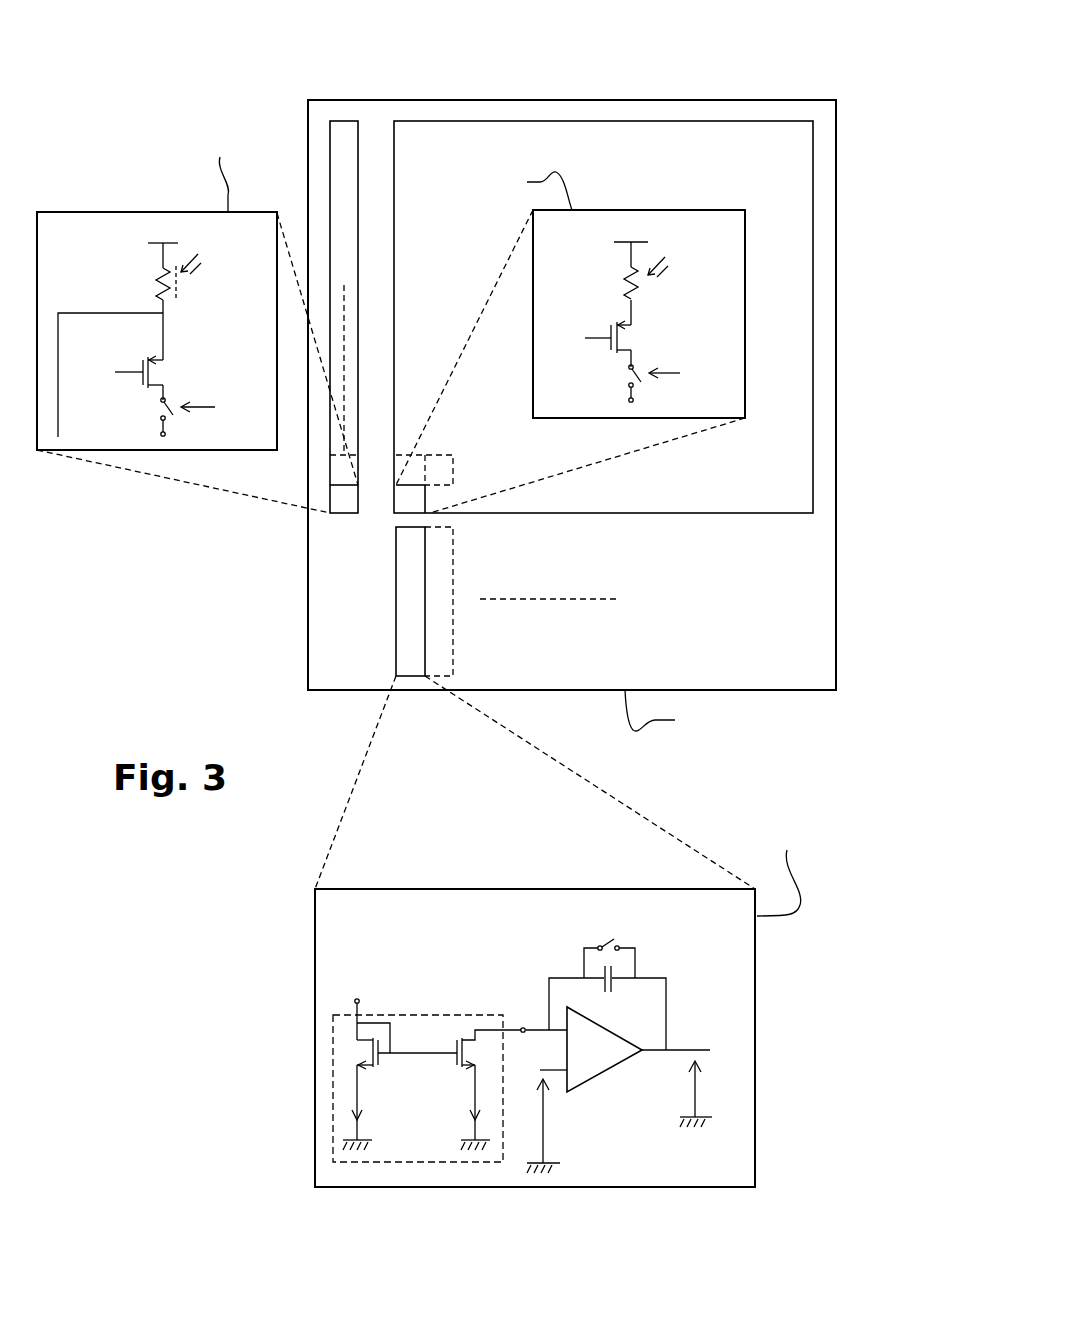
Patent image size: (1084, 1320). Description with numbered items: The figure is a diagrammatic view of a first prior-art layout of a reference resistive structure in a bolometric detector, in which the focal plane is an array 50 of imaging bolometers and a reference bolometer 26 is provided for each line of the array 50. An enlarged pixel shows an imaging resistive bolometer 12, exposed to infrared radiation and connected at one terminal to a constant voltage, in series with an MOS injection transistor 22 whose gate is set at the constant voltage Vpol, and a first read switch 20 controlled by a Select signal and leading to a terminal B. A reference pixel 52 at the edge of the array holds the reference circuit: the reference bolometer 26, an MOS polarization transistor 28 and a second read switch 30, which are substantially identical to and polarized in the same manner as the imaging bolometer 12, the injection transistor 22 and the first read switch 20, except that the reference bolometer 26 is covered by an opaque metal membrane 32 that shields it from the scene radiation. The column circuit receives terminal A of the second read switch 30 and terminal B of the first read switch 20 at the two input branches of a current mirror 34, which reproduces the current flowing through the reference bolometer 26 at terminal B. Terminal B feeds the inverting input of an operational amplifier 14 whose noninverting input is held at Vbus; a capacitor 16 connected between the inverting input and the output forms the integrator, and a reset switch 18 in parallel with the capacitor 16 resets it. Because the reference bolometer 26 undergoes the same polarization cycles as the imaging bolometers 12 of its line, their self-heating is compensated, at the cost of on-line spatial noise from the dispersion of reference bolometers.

The array of imaging bolometers 50 is at (686, 121).
The reference pixel 52 is at (96, 212).
The reference bolometer 26 is at (150, 285).
The opaque metal membrane 32 is at (178, 285).
The MOS polarization transistor 28 is at (166, 366).
The second read switch 30 is at (158, 404).
The resistive bolometer 12 is at (639, 288).
The MOS injection transistor 22 is at (610, 325).
The first read switch 20 is at (624, 378).
The current mirror 34 is at (390, 1162).
The operational amplifier 14 is at (614, 1068).
The capacitor 16 is at (613, 985).
The reset switch 18 is at (607, 941).